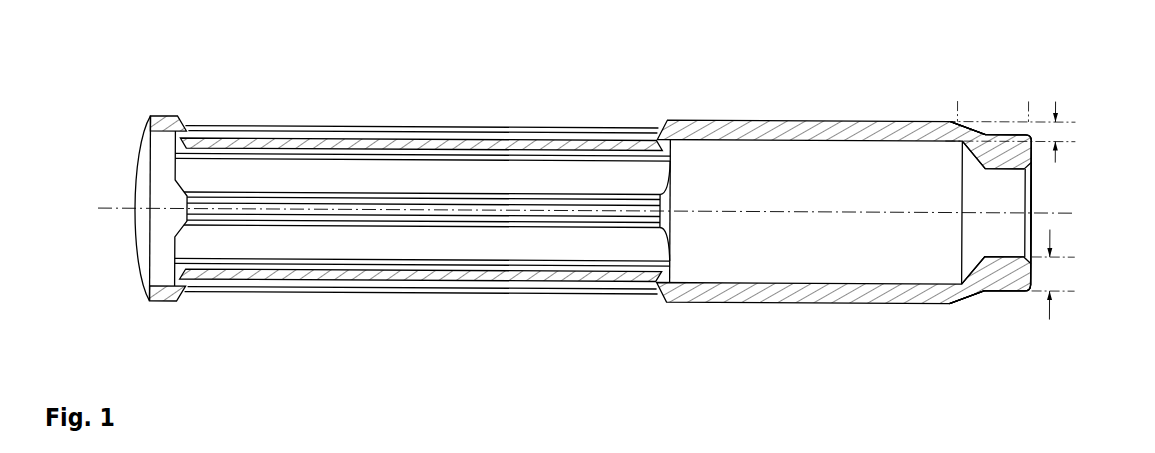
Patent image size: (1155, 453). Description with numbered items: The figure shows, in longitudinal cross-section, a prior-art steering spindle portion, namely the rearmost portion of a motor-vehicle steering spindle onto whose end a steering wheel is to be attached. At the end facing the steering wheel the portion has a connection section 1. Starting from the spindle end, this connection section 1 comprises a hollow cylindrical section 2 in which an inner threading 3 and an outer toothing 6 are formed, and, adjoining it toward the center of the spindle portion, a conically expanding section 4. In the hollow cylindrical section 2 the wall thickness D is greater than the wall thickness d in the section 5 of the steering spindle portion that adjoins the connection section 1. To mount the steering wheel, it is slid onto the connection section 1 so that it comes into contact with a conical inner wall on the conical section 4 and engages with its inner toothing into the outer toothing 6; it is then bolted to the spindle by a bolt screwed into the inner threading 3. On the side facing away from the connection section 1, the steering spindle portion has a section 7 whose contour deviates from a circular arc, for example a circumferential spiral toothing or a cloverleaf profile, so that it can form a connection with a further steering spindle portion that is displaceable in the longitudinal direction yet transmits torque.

The connection section 1 is at (1030, 95).
The hollow cylindrical section 2 is at (1002, 273).
The inner threading 3 is at (1002, 165).
The conically expanding section 4 is at (960, 295).
The section of the steering spindle portion 5 is at (752, 295).
The outer toothing 6 is at (1020, 298).
The section with non-circular contour 7 is at (407, 280).
The wall thickness d is at (1020, 132).
The wall thickness D is at (1065, 274).